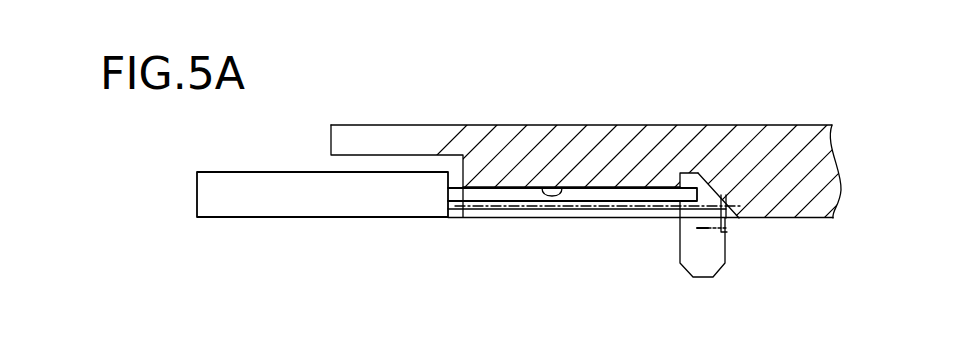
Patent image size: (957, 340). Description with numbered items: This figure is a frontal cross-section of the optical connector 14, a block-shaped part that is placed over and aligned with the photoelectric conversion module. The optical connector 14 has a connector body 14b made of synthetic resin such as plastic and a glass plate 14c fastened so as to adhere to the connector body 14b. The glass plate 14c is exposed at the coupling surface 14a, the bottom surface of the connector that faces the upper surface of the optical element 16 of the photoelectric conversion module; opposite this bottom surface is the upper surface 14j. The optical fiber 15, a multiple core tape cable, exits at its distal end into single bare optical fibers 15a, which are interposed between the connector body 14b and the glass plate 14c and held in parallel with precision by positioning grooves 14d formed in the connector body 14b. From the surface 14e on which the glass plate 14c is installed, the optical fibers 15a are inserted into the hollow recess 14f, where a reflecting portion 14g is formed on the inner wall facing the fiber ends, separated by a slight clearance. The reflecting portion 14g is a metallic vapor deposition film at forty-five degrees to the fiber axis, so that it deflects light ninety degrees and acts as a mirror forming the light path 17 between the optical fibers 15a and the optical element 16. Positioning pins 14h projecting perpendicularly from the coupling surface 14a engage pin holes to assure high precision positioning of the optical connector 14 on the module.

The optical connector 14 is at (798, 127).
The coupling surface 14a is at (803, 219).
The connector body 14b is at (668, 125).
The glass plate 14c is at (497, 212).
The positioning grooves 14d is at (591, 137).
The surface 14e is at (559, 187).
The hollow recess 14f is at (694, 172).
The reflecting portion 14g is at (735, 218).
The positioning pins 14h is at (680, 242).
The upper surface 14j is at (818, 126).
The optical fiber 15 is at (247, 218).
The optical fibers 15a is at (499, 200).
The optical element 16 is at (707, 231).
The light path 17 is at (740, 152).